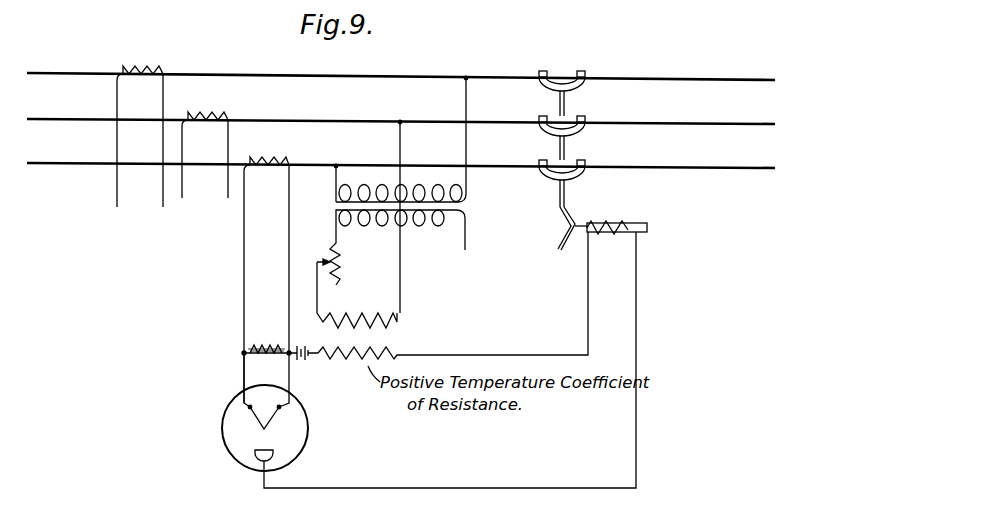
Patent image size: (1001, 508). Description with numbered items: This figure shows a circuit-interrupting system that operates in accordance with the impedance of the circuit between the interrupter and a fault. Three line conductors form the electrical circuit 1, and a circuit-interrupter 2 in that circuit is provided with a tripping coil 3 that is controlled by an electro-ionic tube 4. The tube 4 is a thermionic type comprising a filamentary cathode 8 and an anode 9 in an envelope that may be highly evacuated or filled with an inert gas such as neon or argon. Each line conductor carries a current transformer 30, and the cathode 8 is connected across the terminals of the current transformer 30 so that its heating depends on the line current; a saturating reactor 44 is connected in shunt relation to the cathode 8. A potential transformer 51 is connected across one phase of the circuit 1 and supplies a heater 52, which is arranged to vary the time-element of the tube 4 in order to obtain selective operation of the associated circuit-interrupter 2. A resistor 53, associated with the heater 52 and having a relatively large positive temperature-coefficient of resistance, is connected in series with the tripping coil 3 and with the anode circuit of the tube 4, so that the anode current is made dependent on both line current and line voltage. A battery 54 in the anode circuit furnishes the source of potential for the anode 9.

The electrical circuit 1 is at (357, 167).
The circuit-interrupter 2 is at (578, 186).
The tripping coil 3 is at (620, 237).
The electro-ionic tube 4 is at (297, 428).
The filamentary cathode 8 is at (253, 418).
The anode 9 is at (256, 460).
The current transformer 30 is at (141, 77).
The saturating reactor 44 is at (256, 348).
The potential transformer 51 is at (336, 208).
The heater 52 is at (357, 318).
The resistor 53 is at (343, 366).
The battery 54 is at (298, 362).